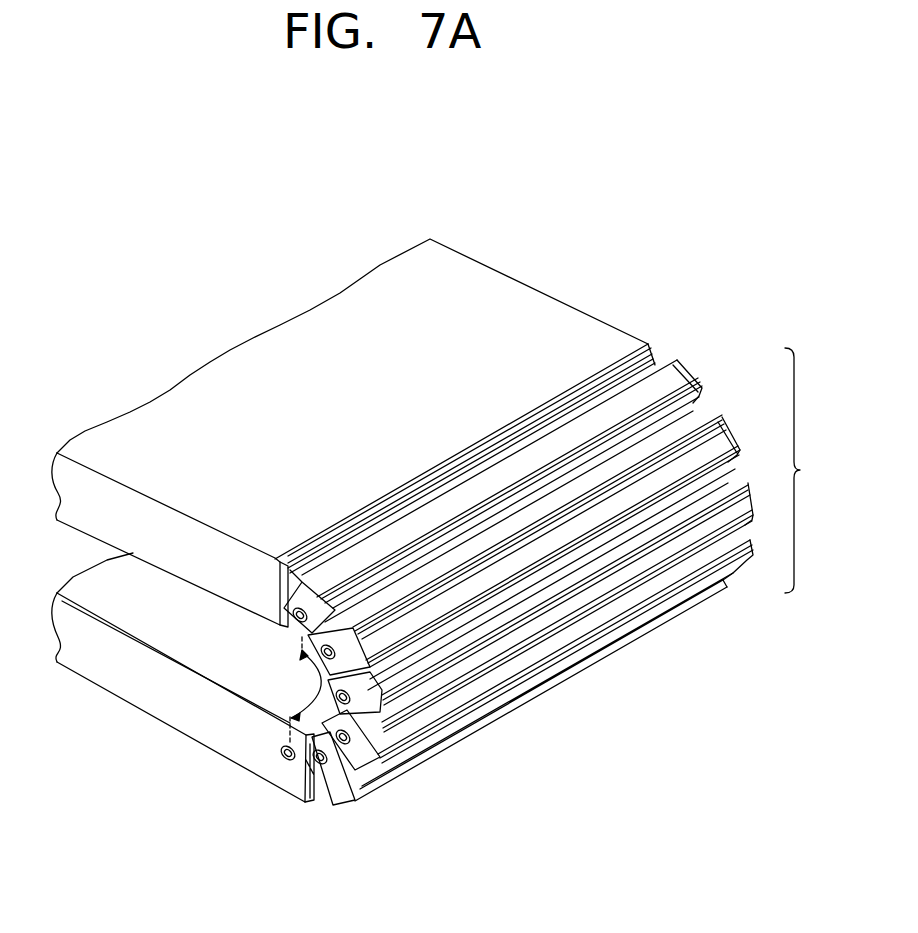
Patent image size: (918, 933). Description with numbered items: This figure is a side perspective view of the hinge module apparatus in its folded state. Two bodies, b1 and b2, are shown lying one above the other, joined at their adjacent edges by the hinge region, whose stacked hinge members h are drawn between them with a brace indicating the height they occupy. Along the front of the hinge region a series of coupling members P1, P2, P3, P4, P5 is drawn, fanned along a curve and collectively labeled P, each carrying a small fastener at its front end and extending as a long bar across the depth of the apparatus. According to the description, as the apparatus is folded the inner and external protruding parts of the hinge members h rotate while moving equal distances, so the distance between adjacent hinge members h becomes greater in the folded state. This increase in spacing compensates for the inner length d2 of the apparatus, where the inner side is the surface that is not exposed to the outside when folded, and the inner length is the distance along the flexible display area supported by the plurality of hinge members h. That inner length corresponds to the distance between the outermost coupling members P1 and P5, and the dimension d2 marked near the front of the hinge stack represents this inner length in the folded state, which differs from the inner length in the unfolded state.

The first body (upper housing) b1 is at (517, 303).
The second body (lower housing) b2 is at (187, 712).
The hinge plates P is at (518, 628).
The outermost coupling member P1 is at (581, 808).
The second hinge plate P2 is at (349, 737).
The third hinge plate P3 is at (349, 697).
The fourth hinge plate P4 is at (334, 652).
The outermost coupling member P5 is at (306, 615).
The inner length d2 is at (304, 691).
The hinge member h is at (801, 470).